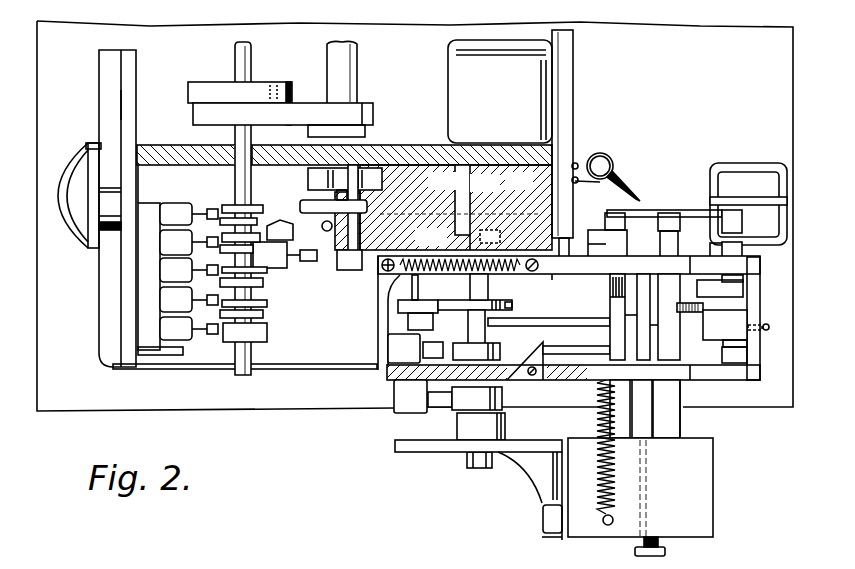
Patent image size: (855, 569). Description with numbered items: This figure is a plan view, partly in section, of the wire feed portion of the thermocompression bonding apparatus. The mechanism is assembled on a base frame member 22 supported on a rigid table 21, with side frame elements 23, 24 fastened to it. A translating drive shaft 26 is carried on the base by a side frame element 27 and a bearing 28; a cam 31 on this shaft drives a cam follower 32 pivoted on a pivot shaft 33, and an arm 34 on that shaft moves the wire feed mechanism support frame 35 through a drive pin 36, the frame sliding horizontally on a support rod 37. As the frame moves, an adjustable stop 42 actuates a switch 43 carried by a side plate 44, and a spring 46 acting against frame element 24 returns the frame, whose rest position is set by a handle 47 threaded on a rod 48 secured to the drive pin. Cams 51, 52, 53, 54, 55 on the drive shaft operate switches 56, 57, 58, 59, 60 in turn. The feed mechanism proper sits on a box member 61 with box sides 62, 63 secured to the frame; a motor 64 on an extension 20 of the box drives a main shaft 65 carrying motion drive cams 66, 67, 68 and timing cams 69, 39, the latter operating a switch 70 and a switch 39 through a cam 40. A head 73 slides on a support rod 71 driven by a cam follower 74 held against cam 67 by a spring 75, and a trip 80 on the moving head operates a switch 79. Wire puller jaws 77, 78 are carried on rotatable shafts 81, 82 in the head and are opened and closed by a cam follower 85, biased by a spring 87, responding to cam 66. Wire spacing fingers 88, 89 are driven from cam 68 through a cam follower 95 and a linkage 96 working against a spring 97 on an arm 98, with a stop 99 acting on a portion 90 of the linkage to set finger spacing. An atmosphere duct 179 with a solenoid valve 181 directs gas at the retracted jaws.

The extension 20 is at (543, 183).
The rigid table 21 is at (86, 395).
The base frame member 22 is at (98, 76).
The side frame element 23 is at (131, 104).
The side frame element 24 is at (574, 101).
The translating drive shaft 26 is at (252, 63).
The side frame element 27 is at (192, 148).
The bearing 28 is at (257, 149).
The cam 31 is at (214, 82).
The cam follower 32 is at (311, 109).
The pivot shaft 33 is at (327, 54).
The arm 34 is at (378, 165).
The wire feed mechanism support frame 35 is at (470, 182).
The drive pin 36 is at (386, 189).
The support rod 37 is at (317, 244).
The switch 39 is at (414, 358).
The cam 40 is at (460, 344).
The adjustable stop 42 is at (338, 262).
The switch 43 is at (276, 268).
The side plate 44 is at (285, 222).
The spring 46 is at (122, 192).
The handle 47 is at (64, 186).
The rod 48 is at (303, 201).
The cam 51 is at (228, 203).
The cam 52 is at (232, 243).
The cam 53 is at (232, 273).
The cam 54 is at (232, 303).
The cam 55 is at (268, 333).
The switch 56 is at (184, 223).
The switch 57 is at (184, 252).
The switch 58 is at (184, 280).
The switch 59 is at (184, 309).
The switch 60 is at (184, 338).
The box member 61 is at (376, 320).
The box side 62 is at (563, 360).
The box side 63 is at (601, 356).
The motor 64 is at (449, 90).
The main shaft 65 is at (466, 179).
The motion drive cam 66 is at (446, 242).
The motion drive cam 67 is at (431, 453).
The motion drive cam 68 is at (513, 307).
The timing cam 69 is at (503, 396).
The switch 70 is at (420, 406).
The support rod 71 is at (655, 431).
The head 73 is at (716, 500).
The cam follower 74 is at (543, 527).
The spring 75 is at (600, 477).
The upper wire puller jaw 77 is at (645, 213).
The lower wire puller jaw 78 is at (706, 213).
The switch 79 is at (644, 548).
The trip 80 is at (666, 553).
The rotatable shaft 81 is at (610, 309).
The rotatable shaft 82 is at (682, 437).
The cam follower 85 is at (586, 234).
The spring 87 is at (562, 286).
The wire spacing finger 88 is at (712, 167).
The wire spacing finger 89 is at (758, 168).
The portion of linkage 90 is at (752, 313).
The cam follower 95 is at (430, 304).
The linkage 96 is at (582, 327).
The spring 97 is at (694, 313).
The arm 98 is at (752, 289).
The stop 99 is at (767, 331).
The atmosphere duct 179 is at (620, 178).
The solenoid valve 181 is at (606, 155).